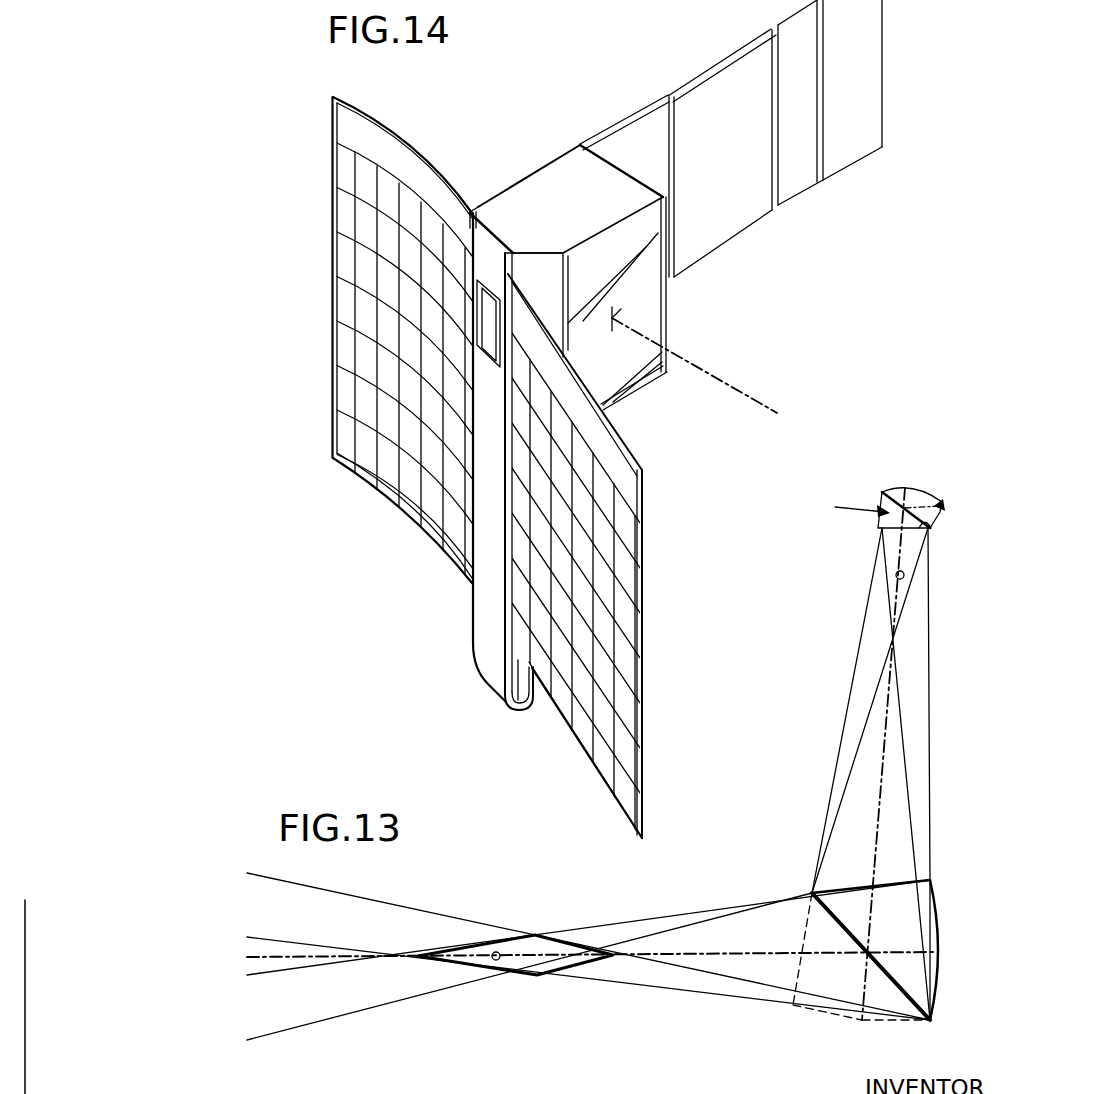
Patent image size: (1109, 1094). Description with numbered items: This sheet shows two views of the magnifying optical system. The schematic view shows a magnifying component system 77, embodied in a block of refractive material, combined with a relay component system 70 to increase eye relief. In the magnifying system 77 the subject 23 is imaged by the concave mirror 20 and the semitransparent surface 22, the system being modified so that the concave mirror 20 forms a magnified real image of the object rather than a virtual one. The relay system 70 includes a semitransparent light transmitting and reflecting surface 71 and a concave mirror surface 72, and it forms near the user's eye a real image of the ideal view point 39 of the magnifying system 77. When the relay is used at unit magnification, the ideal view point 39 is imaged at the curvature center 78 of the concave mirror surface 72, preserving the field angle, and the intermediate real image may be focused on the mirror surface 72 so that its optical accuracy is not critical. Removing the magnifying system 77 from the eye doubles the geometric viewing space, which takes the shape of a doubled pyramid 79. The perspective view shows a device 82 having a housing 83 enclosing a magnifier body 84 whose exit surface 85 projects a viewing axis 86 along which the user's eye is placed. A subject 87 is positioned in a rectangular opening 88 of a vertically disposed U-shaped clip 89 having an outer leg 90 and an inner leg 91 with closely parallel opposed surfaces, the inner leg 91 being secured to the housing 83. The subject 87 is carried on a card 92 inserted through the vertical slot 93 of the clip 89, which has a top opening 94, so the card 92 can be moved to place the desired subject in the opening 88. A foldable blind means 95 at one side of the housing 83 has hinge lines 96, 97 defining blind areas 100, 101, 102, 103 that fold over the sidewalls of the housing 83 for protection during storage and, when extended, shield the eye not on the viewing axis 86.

In FIG. 13, the concave mirror 20 is at (923, 490).
In FIG. 13, the semitransparent surface 22 is at (926, 527).
In FIG. 13, the subject 23 is at (944, 505).
In FIG. 13, the ideal view point 39 is at (905, 576).
In FIG. 13, the relay component system 70 is at (806, 867).
In FIG. 13, the semitransparent light transmitting and reflecting surface 71 is at (907, 990).
In FIG. 13, the concave mirror surface 72 is at (938, 912).
In FIG. 13, the magnifying component system 77 is at (847, 509).
In FIG. 13, the curvature center 78 is at (496, 961).
In FIG. 13, the doubled pyramid 79 is at (582, 963).
In FIG. 14, the device 82 is at (516, 181).
In FIG. 14, the housing 83 is at (553, 182).
In FIG. 14, the magnifier body 84 is at (650, 284).
In FIG. 14, the exit surface 85 is at (607, 365).
In FIG. 14, the viewing axis 86 is at (718, 381).
In FIG. 14, the subject 87 is at (492, 318).
In FIG. 14, the rectangular opening 88 is at (492, 357).
In FIG. 14, the U-shaped clip 89 is at (490, 548).
In FIG. 14, the outer leg 90 is at (497, 667).
In FIG. 14, the inner leg 91 is at (533, 693).
In FIG. 14, the card 92 is at (645, 498).
In FIG. 14, the vertical slot 93 is at (520, 712).
In FIG. 14, the top opening 94 is at (477, 212).
In FIG. 14, the foldable blind means 95 is at (858, 166).
In FIG. 14, the hinge line 96 is at (580, 145).
In FIG. 14, the hinge line 97 is at (668, 97).
In FIG. 14, the blind area 100 is at (611, 159).
In FIG. 14, the blind area 101 is at (705, 105).
In FIG. 14, the blind area 102 is at (815, 57).
In FIG. 14, the blind area 103 is at (870, 21).